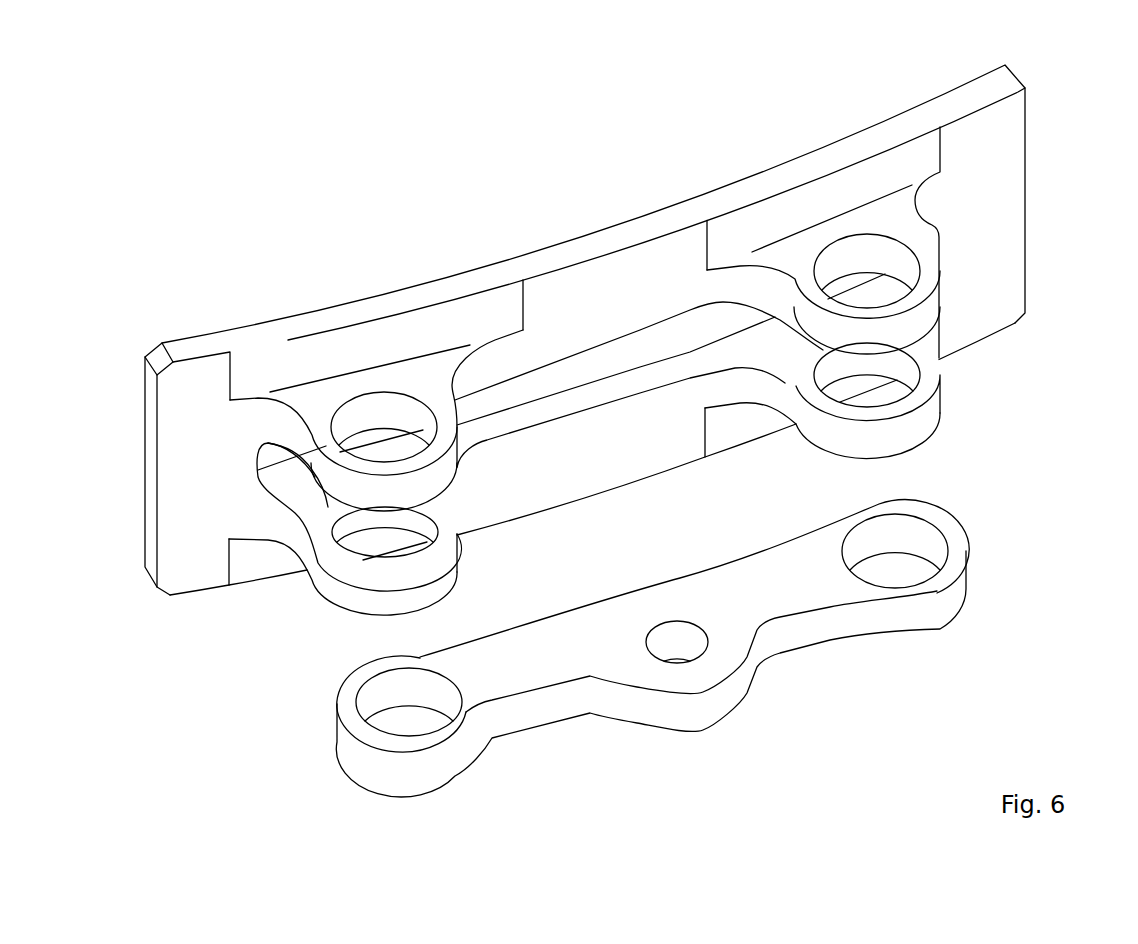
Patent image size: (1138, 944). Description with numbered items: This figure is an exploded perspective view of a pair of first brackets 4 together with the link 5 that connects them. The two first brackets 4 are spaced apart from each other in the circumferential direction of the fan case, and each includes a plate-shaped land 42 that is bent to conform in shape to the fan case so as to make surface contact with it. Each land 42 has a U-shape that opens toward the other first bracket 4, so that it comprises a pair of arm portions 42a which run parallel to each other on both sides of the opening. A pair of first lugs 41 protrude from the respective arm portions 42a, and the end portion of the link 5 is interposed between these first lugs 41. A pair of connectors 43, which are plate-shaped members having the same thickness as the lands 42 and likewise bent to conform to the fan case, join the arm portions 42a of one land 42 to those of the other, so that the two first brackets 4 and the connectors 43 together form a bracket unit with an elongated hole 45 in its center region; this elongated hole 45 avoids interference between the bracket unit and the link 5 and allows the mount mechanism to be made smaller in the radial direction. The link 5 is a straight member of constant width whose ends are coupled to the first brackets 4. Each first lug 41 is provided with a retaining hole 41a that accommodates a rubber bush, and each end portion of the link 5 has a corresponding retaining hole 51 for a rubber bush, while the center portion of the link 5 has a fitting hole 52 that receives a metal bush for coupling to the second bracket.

The first bracket 4 is at (592, 387).
The first lug 41 is at (903, 215).
The retaining hole 41a is at (369, 410).
The land 42 is at (1000, 233).
The arm portion 42a is at (448, 325).
The connector 43 is at (640, 265).
The elongated hole 45 is at (583, 366).
The link 5 is at (693, 655).
The retaining hole 51 is at (915, 577).
The fitting hole 52 is at (697, 652).